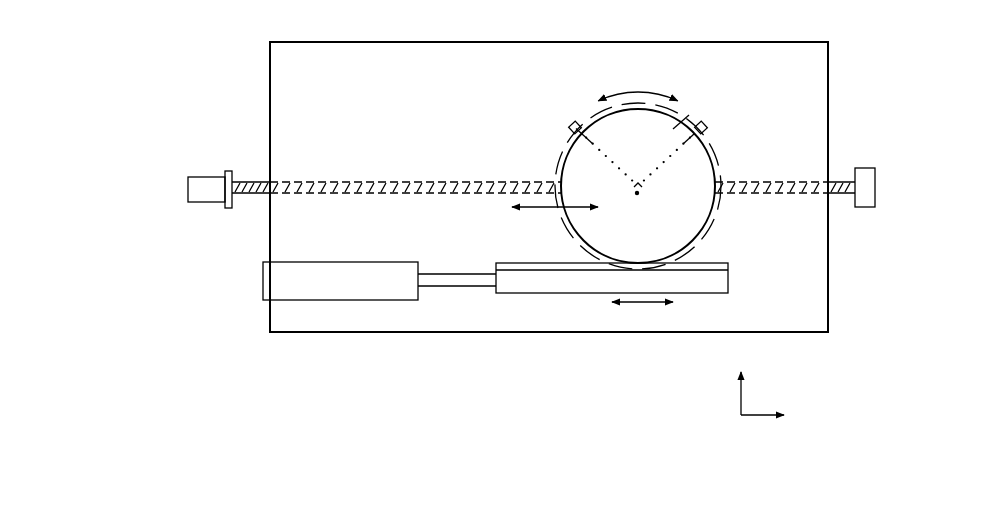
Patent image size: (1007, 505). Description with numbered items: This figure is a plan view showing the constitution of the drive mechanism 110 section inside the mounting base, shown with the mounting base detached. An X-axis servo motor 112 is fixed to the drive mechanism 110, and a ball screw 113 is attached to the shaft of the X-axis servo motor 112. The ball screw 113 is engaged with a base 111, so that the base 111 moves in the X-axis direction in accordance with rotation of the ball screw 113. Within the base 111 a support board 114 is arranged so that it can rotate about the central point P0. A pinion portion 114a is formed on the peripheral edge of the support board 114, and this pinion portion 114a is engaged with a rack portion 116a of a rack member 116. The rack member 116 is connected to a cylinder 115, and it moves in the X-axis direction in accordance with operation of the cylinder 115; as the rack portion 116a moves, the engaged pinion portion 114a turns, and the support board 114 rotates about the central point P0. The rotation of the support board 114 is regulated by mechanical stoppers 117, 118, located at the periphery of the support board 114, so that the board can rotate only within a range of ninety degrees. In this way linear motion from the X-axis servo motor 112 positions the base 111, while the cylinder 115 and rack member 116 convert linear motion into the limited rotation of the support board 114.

The drive mechanism 110 is at (570, 29).
The base 111 is at (435, 50).
The X-axis servo motor 112 is at (203, 201).
The ball screw 113 is at (260, 176).
The support board 114 is at (682, 122).
The pinion portion 114a is at (713, 219).
The cylinder 115 is at (298, 292).
The rack member 116 is at (580, 295).
The rack portion 116a is at (542, 263).
The mechanical stopper 117 is at (706, 128).
The mechanical stopper 118 is at (569, 130).
The central point P0 is at (639, 195).